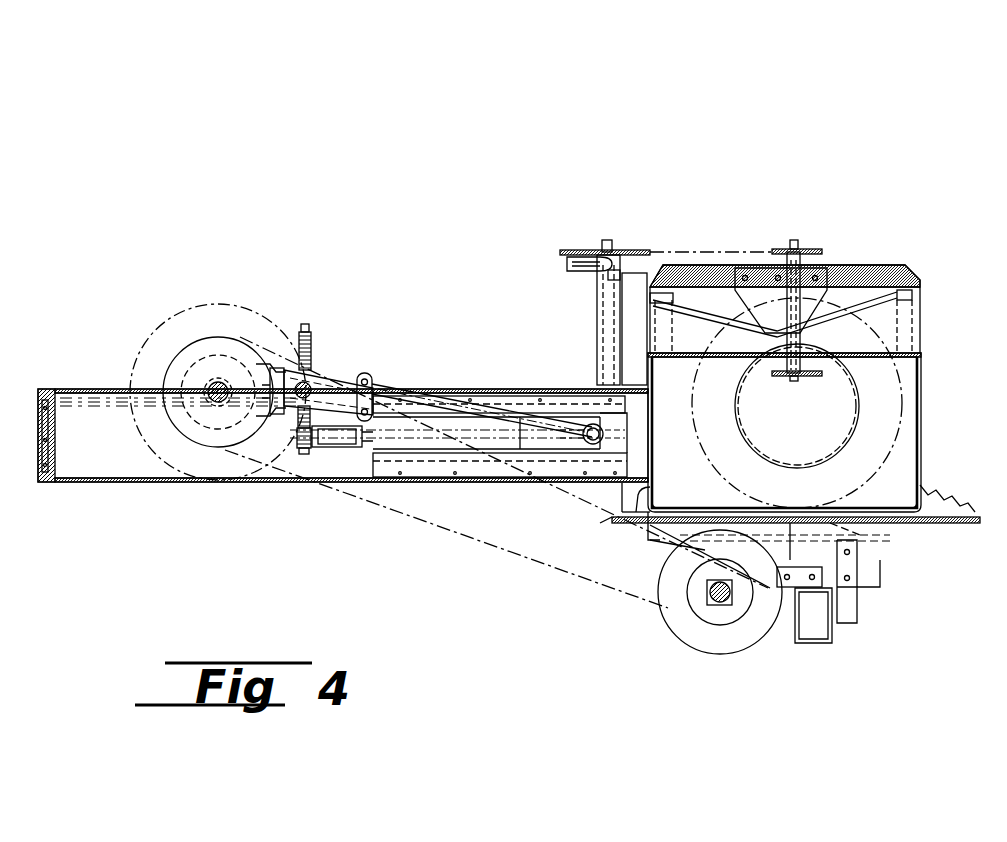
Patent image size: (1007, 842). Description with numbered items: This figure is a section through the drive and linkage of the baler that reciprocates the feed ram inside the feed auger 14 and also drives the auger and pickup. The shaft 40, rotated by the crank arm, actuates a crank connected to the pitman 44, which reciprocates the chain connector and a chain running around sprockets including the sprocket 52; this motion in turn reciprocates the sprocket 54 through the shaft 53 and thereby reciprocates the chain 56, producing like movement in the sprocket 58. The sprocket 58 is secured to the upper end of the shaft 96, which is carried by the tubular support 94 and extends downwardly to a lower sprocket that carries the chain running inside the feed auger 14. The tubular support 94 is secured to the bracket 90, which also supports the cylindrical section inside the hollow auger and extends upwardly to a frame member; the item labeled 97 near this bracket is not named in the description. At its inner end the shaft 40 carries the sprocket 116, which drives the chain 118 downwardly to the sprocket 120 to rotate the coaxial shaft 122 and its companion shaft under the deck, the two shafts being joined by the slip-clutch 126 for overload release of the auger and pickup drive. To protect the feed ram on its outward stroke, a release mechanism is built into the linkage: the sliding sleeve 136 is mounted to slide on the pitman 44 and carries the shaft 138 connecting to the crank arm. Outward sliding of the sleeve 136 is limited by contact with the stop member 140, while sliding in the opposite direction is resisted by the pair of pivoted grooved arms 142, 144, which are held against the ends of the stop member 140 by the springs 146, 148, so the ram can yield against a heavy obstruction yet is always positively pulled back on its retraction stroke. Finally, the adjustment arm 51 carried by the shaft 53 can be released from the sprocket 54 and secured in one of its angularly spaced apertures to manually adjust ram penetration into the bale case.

The feed auger 14 is at (903, 410).
The shaft 40 is at (214, 390).
The pitman 44 is at (472, 405).
The adjustment arm 51 is at (585, 262).
The sprocket 52 is at (652, 452).
The shaft 53 is at (605, 240).
The sprocket 54 is at (578, 252).
The chain 56 is at (712, 250).
The sprocket 58 is at (805, 250).
The bracket 90 is at (757, 270).
The tubular support 94 is at (895, 290).
The shaft 96 is at (792, 250).
The hopper frame 97 is at (862, 263).
The sprocket 116 is at (204, 352).
The chain 118 is at (490, 548).
The sprocket 120 is at (737, 612).
The shaft 122 is at (720, 594).
The slip-clutch 126 is at (722, 648).
The sliding sleeve 136 is at (374, 392).
The shaft 138 is at (338, 378).
The stop member 140 is at (272, 380).
The pivoted grooved arm 142 is at (362, 352).
The pivoted grooved arm 144 is at (310, 450).
The spring 146 is at (308, 366).
The spring 148 is at (300, 445).